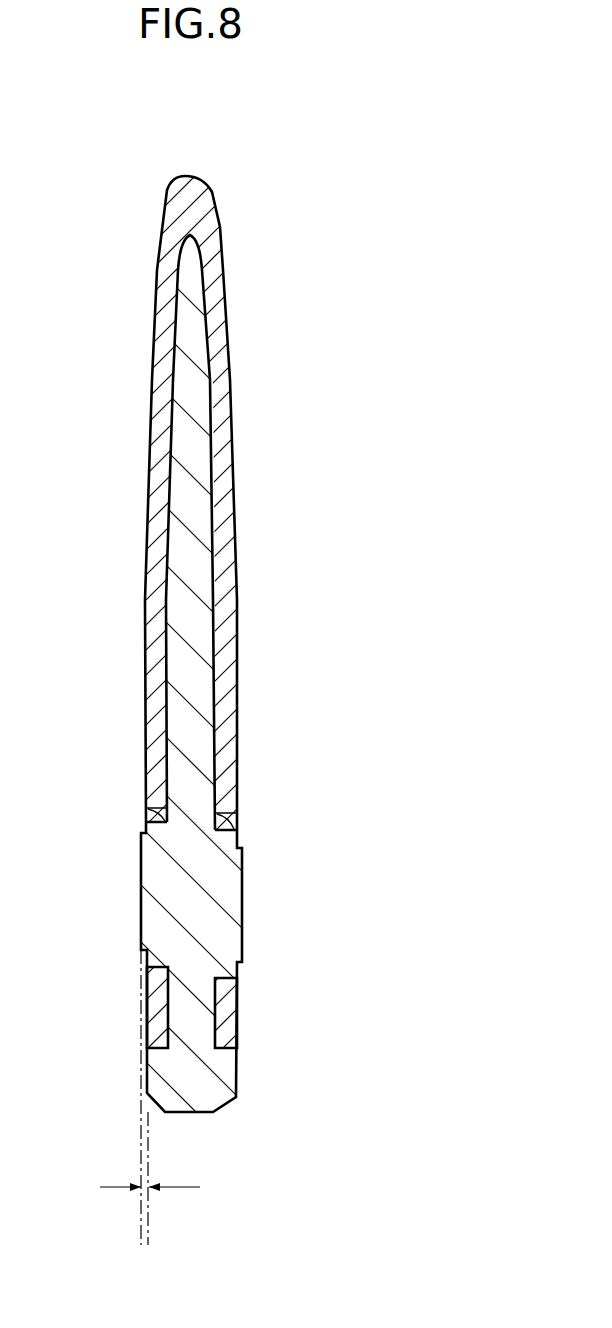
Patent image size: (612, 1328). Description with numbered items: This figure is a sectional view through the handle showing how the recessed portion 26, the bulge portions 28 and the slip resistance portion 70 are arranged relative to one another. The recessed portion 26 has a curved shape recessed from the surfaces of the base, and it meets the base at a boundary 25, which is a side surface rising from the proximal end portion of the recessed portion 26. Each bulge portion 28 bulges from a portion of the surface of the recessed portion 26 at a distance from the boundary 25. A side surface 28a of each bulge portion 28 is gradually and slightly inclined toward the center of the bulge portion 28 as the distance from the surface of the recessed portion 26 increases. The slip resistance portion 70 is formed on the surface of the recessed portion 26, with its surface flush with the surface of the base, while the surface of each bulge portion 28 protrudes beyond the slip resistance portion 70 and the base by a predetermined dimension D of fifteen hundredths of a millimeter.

The slip resistance portion 70 is at (222, 523).
The recessed portion 26 is at (162, 632).
The bulge portion 28 is at (145, 878).
The side surface 28a is at (148, 807).
The boundary 25 is at (233, 1037).